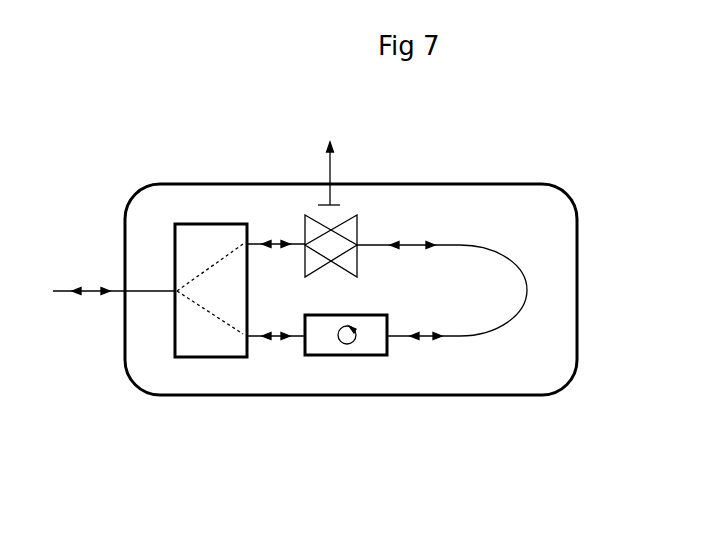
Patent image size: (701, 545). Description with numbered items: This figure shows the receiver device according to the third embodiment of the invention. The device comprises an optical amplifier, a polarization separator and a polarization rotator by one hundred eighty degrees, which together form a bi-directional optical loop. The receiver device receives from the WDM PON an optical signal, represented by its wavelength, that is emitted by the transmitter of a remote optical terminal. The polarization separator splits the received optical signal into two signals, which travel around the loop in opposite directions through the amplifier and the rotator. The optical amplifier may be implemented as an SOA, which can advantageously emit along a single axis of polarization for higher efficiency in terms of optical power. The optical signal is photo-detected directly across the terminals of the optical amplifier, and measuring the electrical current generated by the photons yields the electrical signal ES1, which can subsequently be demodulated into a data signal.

The electrical signal ES1 is at (345, 173).